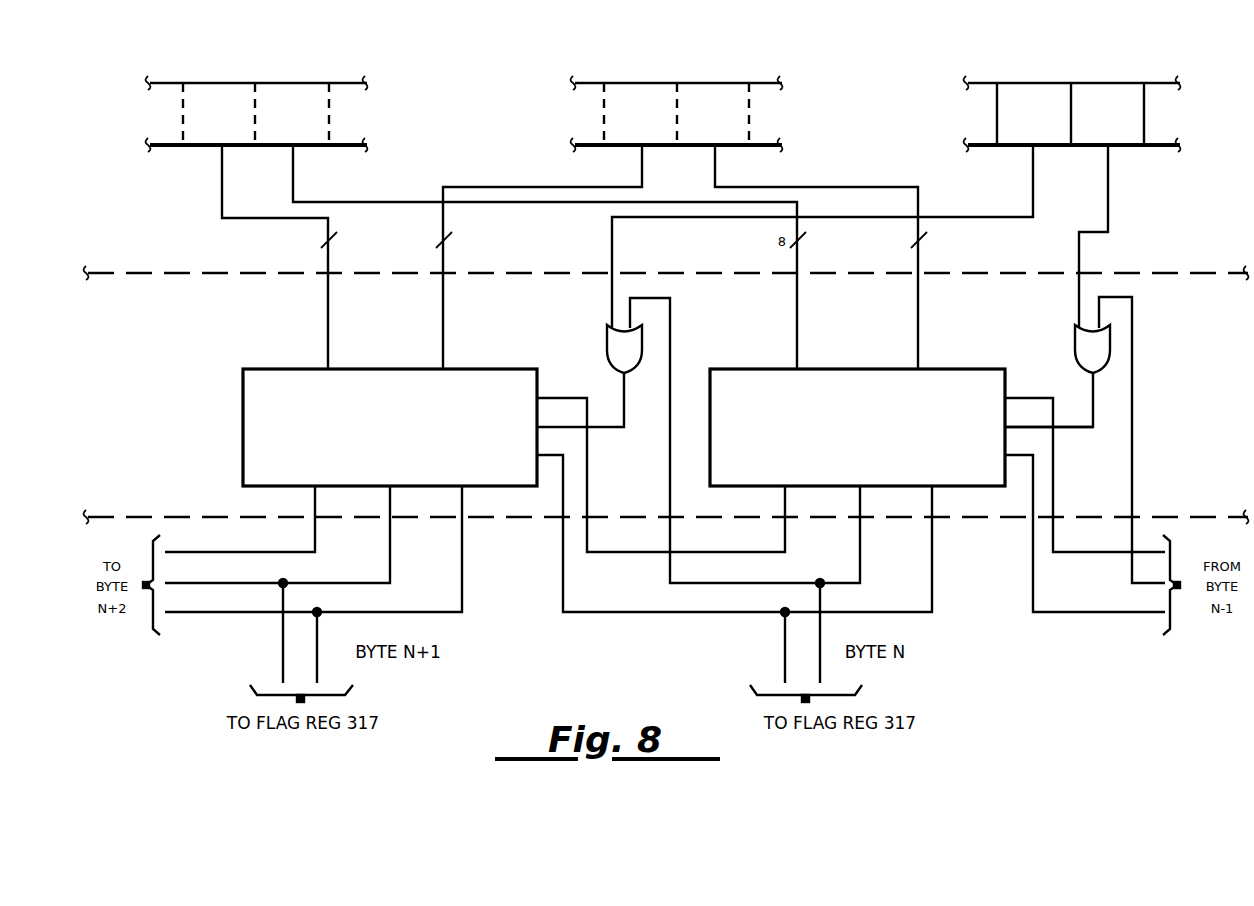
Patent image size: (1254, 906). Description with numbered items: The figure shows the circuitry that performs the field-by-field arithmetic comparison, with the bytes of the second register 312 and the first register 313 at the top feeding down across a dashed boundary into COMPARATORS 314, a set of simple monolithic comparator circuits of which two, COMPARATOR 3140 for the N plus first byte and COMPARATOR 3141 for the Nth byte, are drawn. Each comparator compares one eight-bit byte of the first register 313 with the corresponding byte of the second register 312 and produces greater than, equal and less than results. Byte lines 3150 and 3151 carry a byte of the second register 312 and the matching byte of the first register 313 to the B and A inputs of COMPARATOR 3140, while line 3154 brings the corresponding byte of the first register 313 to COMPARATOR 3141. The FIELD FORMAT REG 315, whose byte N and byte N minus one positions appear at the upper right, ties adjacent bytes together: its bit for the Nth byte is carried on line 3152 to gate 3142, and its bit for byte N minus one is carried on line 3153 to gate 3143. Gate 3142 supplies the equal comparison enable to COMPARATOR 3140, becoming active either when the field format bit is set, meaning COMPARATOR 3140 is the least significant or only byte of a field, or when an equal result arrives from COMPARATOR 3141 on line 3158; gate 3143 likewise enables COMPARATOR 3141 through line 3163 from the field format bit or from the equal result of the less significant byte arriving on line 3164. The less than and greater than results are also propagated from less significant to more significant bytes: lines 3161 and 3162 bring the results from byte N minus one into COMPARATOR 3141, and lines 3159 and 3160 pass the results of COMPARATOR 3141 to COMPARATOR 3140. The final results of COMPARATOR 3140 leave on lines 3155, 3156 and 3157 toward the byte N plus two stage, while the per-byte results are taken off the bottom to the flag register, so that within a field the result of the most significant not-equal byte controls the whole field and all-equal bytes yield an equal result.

The REG 2 312 is at (196, 152).
The REG 1 313 is at (609, 152).
The COMPARATORS 314 is at (157, 272).
The FIELD FORMAT REG 315 is at (1010, 152).
The COMPARATOR circuit 3140 is at (383, 369).
The COMPARATOR circuit 3141 is at (847, 369).
The gate 3142 is at (606, 340).
The gate 3143 is at (1073, 340).
The register 2 byte input line to comparator B 3150 is at (330, 297).
The register 1 byte input line to comparator A 3151 is at (445, 297).
The field format register byte N line 3152 is at (611, 308).
The field format register byte N-1 line 3153 is at (1077, 308).
The register 1 byte input line to comparator A 3154 is at (920, 297).
The A greater than B output line to byte N+2 3155 is at (200, 553).
The A equal B output line to byte N+2 3156 is at (200, 584).
The A less than B output line to byte N+2 3157 is at (200, 613).
The OR gate input line 3158 is at (672, 325).
The A less than B carry line 3159 is at (598, 556).
The A B carry line 3160 is at (587, 612).
The A greater than B line from byte N-1 3161 is at (1043, 612).
The A less than B line from byte N-1 3162 is at (1063, 556).
The OR gate output line 3163 is at (1073, 430).
The OR gate input line from byte N-1 3164 is at (1134, 325).